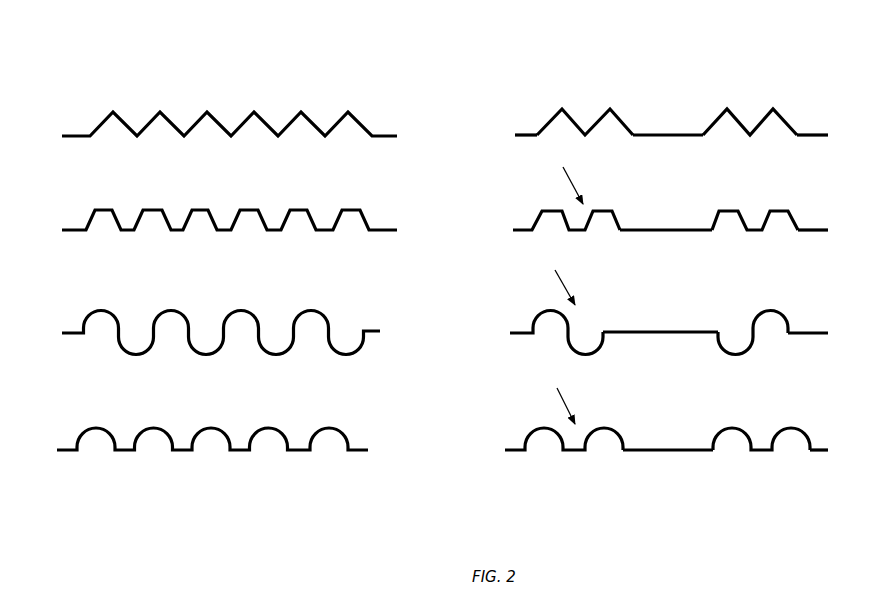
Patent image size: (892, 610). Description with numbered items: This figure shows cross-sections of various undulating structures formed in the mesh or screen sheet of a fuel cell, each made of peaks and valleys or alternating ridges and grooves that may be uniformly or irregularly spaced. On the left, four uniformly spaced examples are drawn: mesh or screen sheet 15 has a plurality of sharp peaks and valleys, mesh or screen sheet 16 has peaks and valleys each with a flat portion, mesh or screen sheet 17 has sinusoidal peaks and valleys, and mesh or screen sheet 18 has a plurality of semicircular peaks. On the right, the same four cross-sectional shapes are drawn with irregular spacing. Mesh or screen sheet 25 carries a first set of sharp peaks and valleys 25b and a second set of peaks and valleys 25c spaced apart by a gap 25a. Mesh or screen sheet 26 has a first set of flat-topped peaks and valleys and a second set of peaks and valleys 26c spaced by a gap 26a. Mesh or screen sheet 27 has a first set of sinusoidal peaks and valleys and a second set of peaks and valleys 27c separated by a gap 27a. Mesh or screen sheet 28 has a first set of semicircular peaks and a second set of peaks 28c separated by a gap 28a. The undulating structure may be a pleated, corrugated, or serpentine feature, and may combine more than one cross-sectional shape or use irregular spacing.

The mesh or screen sheet 15 is at (78, 133).
The mesh or screen sheet 16 is at (78, 228).
The mesh or screen sheet 17 is at (78, 331).
The mesh or screen sheet 18 is at (75, 448).
The mesh or screen sheet 25 is at (657, 77).
The gap 25a is at (667, 133).
The first set of peaks and valleys 25b is at (581, 85).
The second set of peaks and valleys 25c is at (757, 92).
The mesh or screen sheet 26 is at (657, 191).
The gap 26a is at (660, 227).
The second set of peaks and valleys 26c is at (749, 204).
The mesh or screen sheet 27 is at (654, 302).
The gap 27a is at (653, 330).
The second set of peaks and valleys 27c is at (784, 302).
The mesh or screen sheet 28 is at (652, 409).
The gap 28a is at (662, 448).
The second set of peaks 28c is at (762, 422).